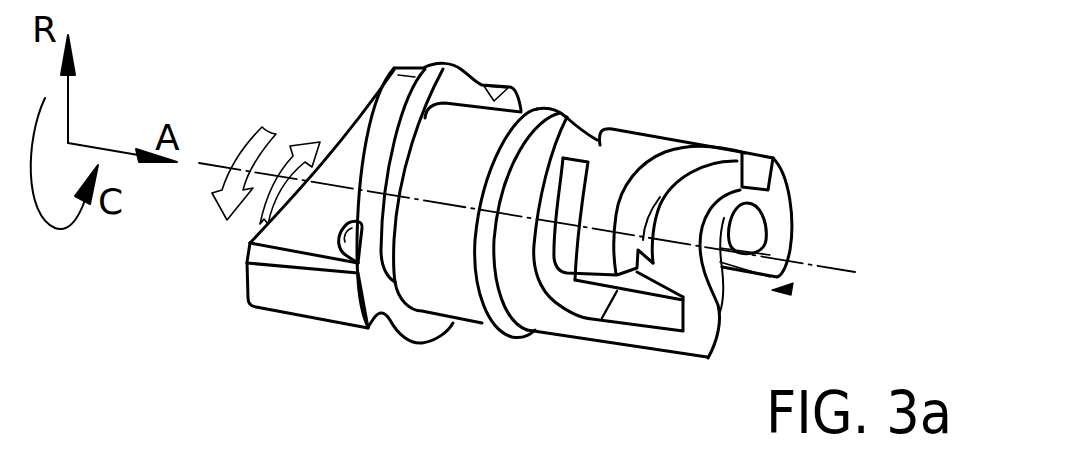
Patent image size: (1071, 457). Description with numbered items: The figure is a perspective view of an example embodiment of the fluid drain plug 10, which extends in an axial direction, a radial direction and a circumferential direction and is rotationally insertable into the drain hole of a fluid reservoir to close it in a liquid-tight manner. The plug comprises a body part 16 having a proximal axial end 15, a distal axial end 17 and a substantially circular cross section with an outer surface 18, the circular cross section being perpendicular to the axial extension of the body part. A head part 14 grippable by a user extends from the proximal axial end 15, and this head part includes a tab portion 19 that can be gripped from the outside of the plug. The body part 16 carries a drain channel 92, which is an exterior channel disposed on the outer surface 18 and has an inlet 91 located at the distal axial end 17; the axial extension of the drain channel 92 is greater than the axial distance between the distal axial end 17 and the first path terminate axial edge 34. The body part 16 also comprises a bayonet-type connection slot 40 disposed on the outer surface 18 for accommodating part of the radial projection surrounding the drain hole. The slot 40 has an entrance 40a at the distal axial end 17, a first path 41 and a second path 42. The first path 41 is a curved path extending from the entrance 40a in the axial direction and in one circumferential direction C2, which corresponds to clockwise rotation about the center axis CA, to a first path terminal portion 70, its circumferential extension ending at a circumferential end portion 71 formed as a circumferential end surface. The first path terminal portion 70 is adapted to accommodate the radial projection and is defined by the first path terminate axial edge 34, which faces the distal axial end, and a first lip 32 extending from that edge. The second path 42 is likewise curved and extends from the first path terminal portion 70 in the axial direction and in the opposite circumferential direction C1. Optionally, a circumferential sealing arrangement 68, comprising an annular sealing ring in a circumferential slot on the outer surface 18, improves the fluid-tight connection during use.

The fluid drain plug 10 is at (770, 67).
The head part 14 is at (401, 103).
The proximal axial end 15 is at (462, 148).
The body part 16 is at (600, 262).
The distal axial end 17 is at (775, 213).
The outer surface 18 is at (517, 297).
The tab portion 19 is at (320, 225).
The first lip 32 is at (710, 288).
The first path terminate axial edge 34 is at (703, 327).
The bayonet-type connection slot 40 is at (628, 282).
The entrance 40a is at (753, 170).
The first path 41 is at (653, 223).
The second path 42 is at (570, 268).
The circumferential sealing arrangement 68 is at (477, 255).
The first path terminal portion 70 is at (657, 285).
The circumferential end portion 71 is at (680, 320).
The inlet 91 is at (782, 289).
The drain channel 92 is at (790, 289).
The center axis CA is at (217, 164).
The opposite circumferential direction C1 is at (288, 147).
The one circumferential direction C2 is at (248, 140).